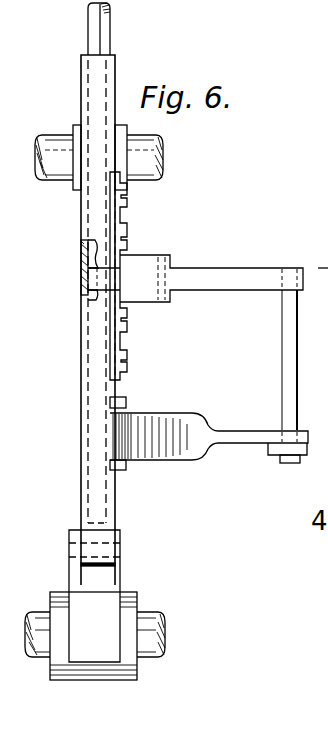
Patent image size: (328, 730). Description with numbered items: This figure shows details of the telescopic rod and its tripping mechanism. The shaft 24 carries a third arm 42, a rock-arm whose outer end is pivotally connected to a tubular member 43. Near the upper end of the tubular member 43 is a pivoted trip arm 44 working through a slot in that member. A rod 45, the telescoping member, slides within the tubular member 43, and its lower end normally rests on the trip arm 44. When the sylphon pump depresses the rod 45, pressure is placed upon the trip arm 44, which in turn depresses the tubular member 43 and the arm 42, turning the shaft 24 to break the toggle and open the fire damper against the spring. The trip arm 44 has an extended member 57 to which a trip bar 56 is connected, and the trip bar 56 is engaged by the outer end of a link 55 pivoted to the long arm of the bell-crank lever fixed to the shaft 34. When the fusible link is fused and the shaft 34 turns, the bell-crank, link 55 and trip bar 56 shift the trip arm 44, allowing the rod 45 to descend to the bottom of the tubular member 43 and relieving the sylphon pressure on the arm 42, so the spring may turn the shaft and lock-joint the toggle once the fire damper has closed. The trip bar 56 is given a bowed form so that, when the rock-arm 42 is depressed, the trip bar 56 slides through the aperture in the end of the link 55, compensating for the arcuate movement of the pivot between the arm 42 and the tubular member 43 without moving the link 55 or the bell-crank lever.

The shaft 24 is at (148, 660).
The shaft 34 is at (150, 183).
The third arm 42 is at (120, 568).
The tubular member 43 is at (80, 420).
The trip arm 44 is at (96, 278).
The rod 45 is at (112, 30).
The link 55 is at (177, 420).
The trip bar 56 is at (283, 349).
The extended member 57 is at (222, 266).